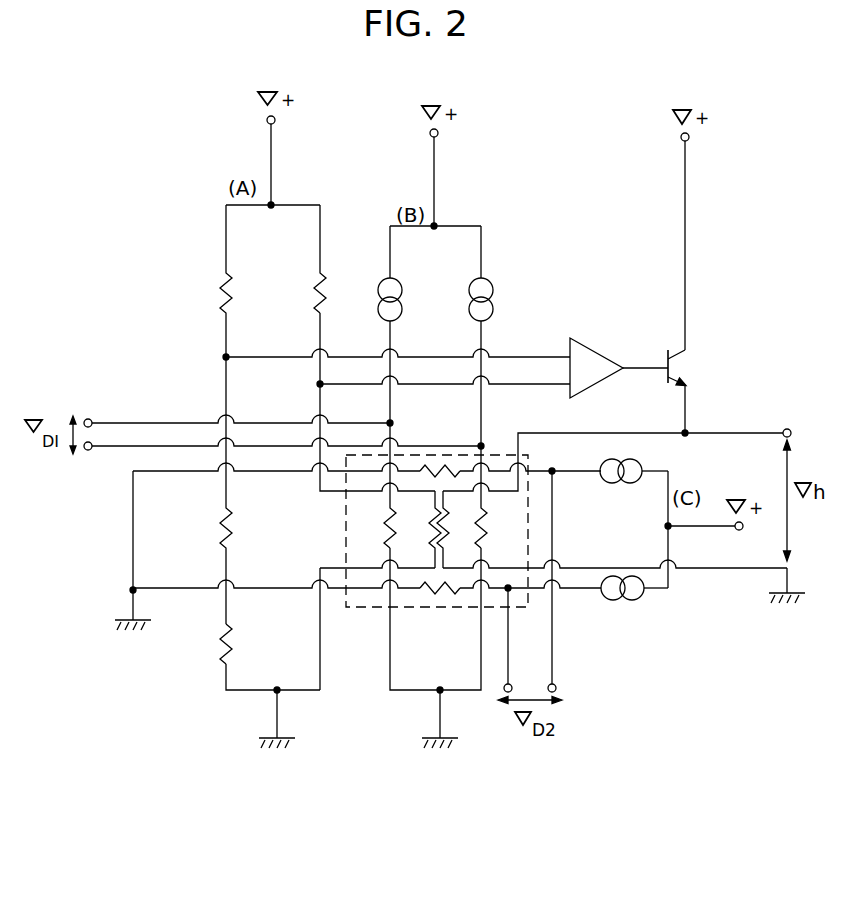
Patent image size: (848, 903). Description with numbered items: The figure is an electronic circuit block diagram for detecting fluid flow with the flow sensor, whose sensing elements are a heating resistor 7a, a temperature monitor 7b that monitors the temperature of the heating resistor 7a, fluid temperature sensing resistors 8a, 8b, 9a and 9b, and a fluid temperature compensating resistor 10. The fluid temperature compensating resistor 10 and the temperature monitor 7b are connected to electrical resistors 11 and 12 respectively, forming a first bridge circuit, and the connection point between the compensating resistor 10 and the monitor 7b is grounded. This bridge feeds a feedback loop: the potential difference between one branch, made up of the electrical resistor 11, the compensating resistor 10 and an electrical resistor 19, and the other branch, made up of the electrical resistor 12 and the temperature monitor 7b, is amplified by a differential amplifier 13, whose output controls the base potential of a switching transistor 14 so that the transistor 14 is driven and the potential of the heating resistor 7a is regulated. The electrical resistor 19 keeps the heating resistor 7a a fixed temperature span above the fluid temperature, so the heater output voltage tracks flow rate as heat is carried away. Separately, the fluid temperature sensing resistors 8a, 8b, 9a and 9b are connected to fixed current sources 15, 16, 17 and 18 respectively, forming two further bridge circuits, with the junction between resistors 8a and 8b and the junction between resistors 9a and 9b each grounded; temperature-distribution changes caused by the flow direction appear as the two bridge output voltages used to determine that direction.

The heating resistor 7a is at (449, 514).
The temperature monitor 7b is at (432, 515).
The fluid temperature sensing resistor 8a is at (388, 516).
The fluid temperature sensing resistor 8b is at (487, 514).
The fluid temperature sensing resistor 9a is at (430, 463).
The fluid temperature sensing resistor 9b is at (440, 596).
The fluid temperature compensating resistor 10 is at (223, 655).
The electrical resistor 11 is at (223, 290).
The electrical resistor 12 is at (317, 289).
The differential amplifier 13 is at (592, 350).
The switching transistor 14 is at (690, 368).
The fixed current source 15 is at (405, 273).
The fixed current source 16 is at (497, 271).
The fixed current source 17 is at (640, 466).
The fixed current source 18 is at (625, 600).
The electrical resistor 19 is at (223, 535).